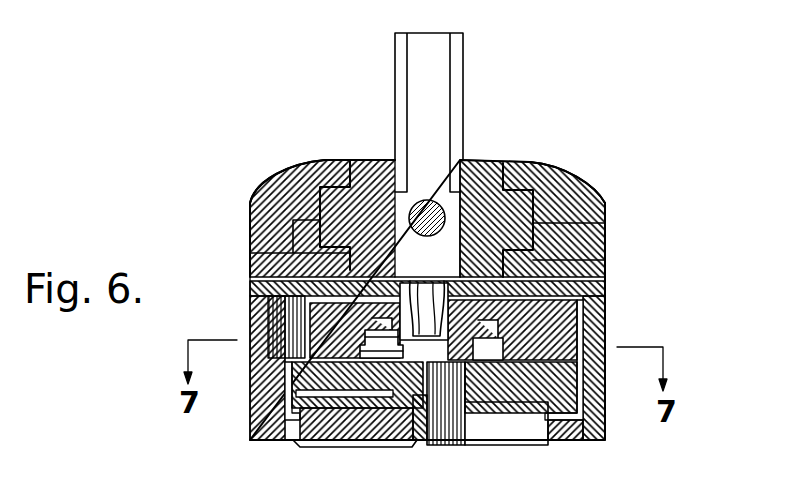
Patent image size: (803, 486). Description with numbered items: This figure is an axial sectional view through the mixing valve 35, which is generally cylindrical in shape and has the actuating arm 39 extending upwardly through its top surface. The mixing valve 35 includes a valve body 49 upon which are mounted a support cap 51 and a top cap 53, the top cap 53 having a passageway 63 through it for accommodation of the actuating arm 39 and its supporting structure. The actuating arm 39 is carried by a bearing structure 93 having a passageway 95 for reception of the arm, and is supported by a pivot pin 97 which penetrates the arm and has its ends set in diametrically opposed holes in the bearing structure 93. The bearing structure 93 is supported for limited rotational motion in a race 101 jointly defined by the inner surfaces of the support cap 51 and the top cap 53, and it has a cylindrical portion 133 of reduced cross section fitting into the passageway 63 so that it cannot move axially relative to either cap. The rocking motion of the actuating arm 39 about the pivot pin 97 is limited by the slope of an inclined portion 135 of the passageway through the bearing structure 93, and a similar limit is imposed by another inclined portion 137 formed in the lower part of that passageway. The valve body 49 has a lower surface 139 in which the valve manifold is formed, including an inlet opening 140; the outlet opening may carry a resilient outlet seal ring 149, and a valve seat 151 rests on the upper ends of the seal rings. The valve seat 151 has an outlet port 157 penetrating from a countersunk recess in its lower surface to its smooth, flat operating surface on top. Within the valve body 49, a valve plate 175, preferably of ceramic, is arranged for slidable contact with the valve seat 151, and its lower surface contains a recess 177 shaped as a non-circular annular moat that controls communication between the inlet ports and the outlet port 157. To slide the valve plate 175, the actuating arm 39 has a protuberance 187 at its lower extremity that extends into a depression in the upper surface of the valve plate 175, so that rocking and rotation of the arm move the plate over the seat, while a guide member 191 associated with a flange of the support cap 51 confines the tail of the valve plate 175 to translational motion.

The mixing valve 35 is at (578, 179).
The actuating arm 39 is at (465, 33).
The valve body 49 is at (600, 363).
The support cap 51 is at (605, 273).
The top cap 53 is at (597, 200).
The passageway 63 is at (518, 170).
The bearing structure 93 is at (374, 162).
The passageway 95 is at (498, 170).
The pivot pin 97 is at (426, 199).
The race 101 is at (300, 190).
The cylindrical portion 133 is at (352, 162).
The inclined portion 135 is at (476, 178).
The inclined portion 137 is at (266, 272).
The lower surface 139 is at (578, 445).
The inlet opening 140 is at (325, 448).
The outlet seal ring 149 is at (418, 442).
The valve seat 151 is at (582, 388).
The outlet port 157 is at (463, 408).
The valve plate 175 is at (590, 328).
The recess 177 is at (378, 356).
The protuberance 187 is at (427, 287).
The guide member 191 is at (606, 306).